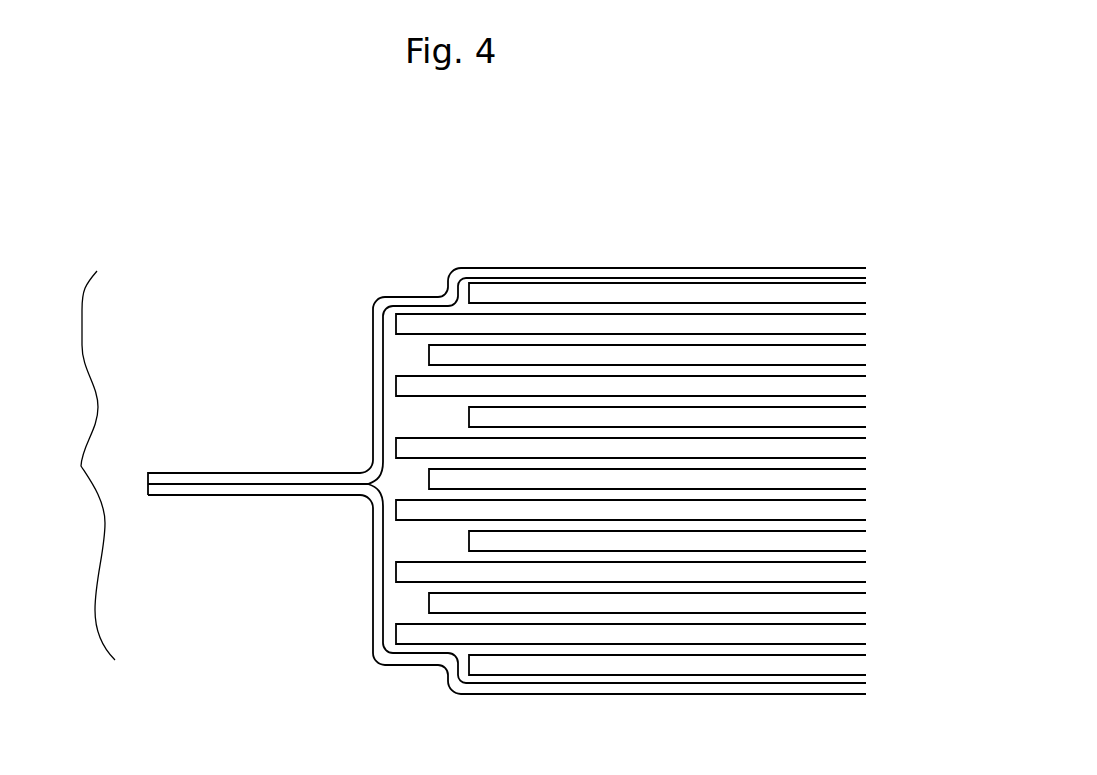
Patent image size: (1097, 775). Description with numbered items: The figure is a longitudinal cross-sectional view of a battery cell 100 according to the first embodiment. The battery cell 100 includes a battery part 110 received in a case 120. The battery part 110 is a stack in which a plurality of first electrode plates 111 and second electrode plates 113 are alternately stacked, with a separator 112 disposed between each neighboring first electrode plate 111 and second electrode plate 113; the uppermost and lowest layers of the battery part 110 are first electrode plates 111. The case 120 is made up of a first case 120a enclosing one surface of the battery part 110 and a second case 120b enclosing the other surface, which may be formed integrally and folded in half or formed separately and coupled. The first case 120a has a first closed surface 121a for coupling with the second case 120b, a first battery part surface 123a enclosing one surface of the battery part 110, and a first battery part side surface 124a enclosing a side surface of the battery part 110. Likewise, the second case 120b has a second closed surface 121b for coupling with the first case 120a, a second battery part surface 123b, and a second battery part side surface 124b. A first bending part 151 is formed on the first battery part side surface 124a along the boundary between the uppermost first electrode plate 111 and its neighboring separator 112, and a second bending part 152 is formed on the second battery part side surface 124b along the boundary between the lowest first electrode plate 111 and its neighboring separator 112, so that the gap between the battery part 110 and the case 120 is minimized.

The battery cell 100 is at (194, 178).
The battery part 110 is at (788, 178).
The first electrode plate 111 is at (603, 289).
The separator 112 is at (673, 320).
The second electrode plate 113 is at (735, 358).
The case 120 is at (73, 465).
The first case 120a is at (192, 442).
The second case 120b is at (192, 528).
The first closed surface 121a is at (240, 478).
The second closed surface 121b is at (268, 490).
The first battery part surface 123a is at (533, 276).
The second battery part surface 123b is at (525, 694).
The first battery part side surface 124a is at (373, 349).
The second battery part side surface 124b is at (373, 622).
The first bending part 151 is at (443, 289).
The second bending part 152 is at (445, 667).